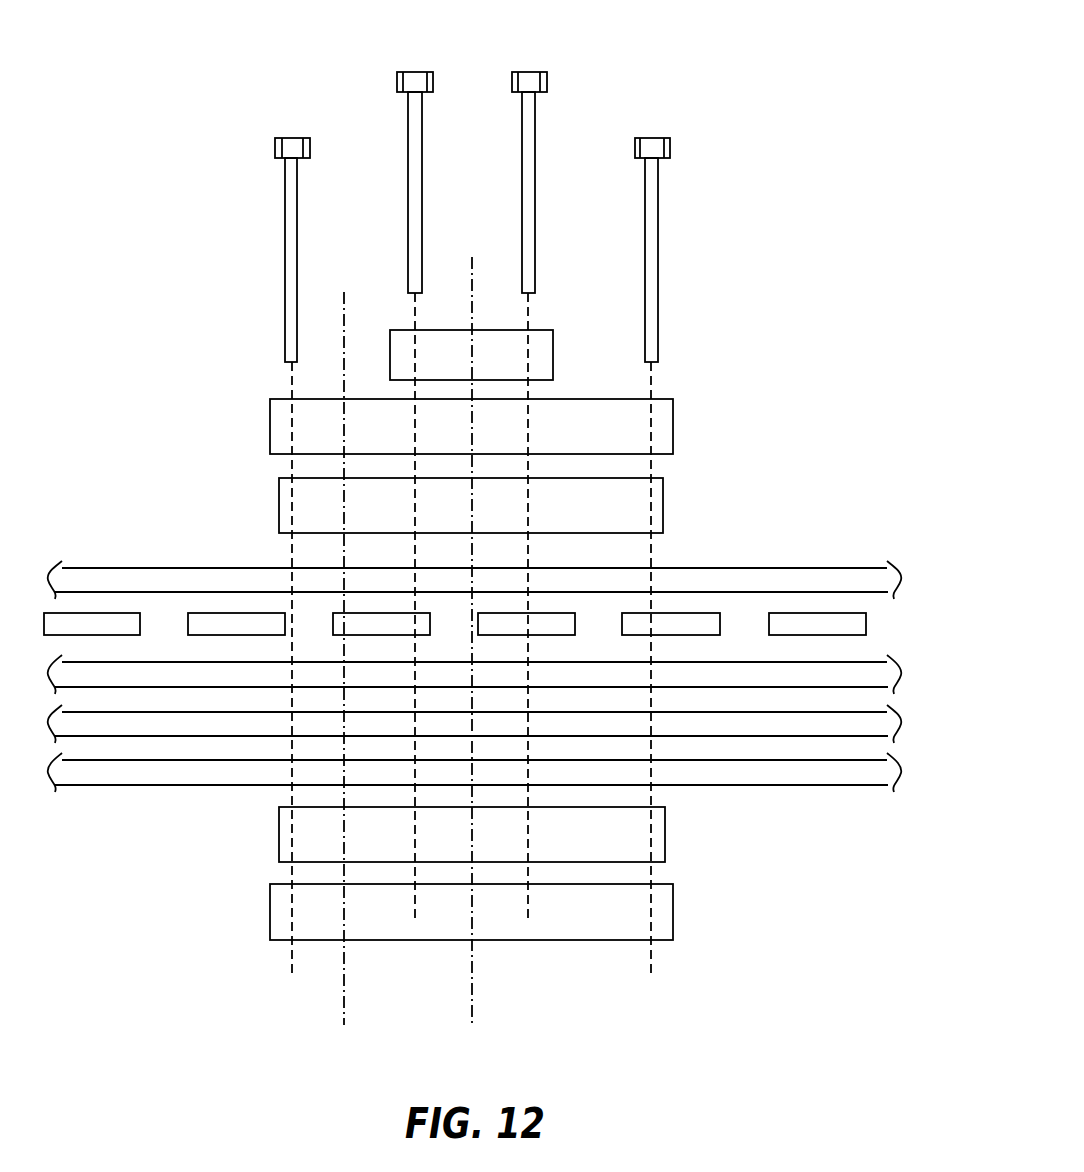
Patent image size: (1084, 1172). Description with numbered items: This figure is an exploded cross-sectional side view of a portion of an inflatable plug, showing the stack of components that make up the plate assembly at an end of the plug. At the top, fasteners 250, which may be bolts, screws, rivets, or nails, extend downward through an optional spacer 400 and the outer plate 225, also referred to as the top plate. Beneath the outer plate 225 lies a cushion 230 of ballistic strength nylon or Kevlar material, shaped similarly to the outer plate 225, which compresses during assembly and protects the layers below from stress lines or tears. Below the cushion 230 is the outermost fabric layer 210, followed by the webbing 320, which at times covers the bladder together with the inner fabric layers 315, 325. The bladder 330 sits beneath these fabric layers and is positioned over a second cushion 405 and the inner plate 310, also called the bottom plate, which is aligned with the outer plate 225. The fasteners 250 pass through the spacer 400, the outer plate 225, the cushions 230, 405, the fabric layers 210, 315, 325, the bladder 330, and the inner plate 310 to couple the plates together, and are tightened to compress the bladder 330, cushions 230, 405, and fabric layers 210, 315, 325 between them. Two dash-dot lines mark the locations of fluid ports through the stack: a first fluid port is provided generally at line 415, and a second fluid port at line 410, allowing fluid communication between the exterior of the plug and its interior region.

The fasteners 250 is at (293, 146).
The spacer 400 is at (553, 350).
The outer plate 225 is at (673, 422).
The cushion 230 is at (663, 500).
The outermost fabric layer 210 is at (889, 577).
The webbing 320 is at (866, 625).
The inner fabric layer 315 is at (890, 672).
The inner fabric layer 325 is at (890, 722).
The bladder 330 is at (890, 770).
The second cushion 405 is at (665, 826).
The inner plate 310 is at (673, 908).
The line 415 is at (345, 982).
The line 410 is at (473, 982).